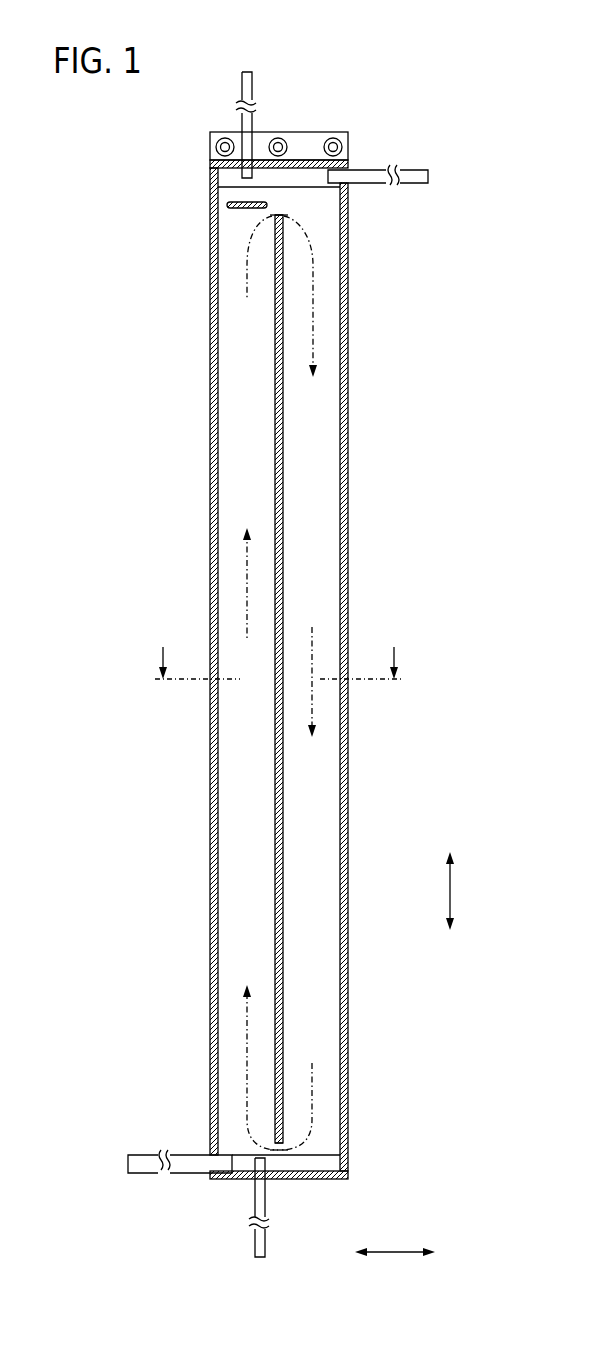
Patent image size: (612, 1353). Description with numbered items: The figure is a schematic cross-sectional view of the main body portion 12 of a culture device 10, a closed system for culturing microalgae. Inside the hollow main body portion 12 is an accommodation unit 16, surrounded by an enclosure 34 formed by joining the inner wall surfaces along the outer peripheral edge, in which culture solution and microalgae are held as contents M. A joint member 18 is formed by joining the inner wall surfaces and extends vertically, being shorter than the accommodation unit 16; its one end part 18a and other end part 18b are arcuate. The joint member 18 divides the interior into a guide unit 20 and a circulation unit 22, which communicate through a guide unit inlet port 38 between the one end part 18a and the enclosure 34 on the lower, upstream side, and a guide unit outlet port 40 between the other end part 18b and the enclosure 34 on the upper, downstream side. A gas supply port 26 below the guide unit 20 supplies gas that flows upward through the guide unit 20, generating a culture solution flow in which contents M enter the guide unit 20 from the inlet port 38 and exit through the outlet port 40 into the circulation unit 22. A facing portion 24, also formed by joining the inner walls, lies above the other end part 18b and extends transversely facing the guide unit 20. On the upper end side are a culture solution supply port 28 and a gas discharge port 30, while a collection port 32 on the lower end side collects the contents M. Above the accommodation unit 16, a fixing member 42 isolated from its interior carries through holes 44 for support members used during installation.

The culture device 10 is at (512, 77).
The main body portion 12 is at (317, 655).
The accommodation unit 16 is at (282, 167).
The joint member 18 is at (277, 353).
The one end part 18a is at (281, 1148).
The other end part 18b is at (281, 214).
The guide unit 20 is at (221, 317).
The circulation unit 22 is at (336, 328).
The facing portion 24 is at (228, 203).
The gas supply port 26 is at (260, 1177).
The culture solution supply port 28 is at (345, 175).
The gas discharge port 30 is at (243, 172).
The collection port 32 is at (213, 1162).
The enclosure 34 is at (345, 403).
The guide unit inlet port 38 is at (278, 1152).
The guide unit outlet port 40 is at (268, 212).
The fixing member 42 is at (310, 143).
The through holes 44 is at (342, 146).
The contents M is at (243, 442).